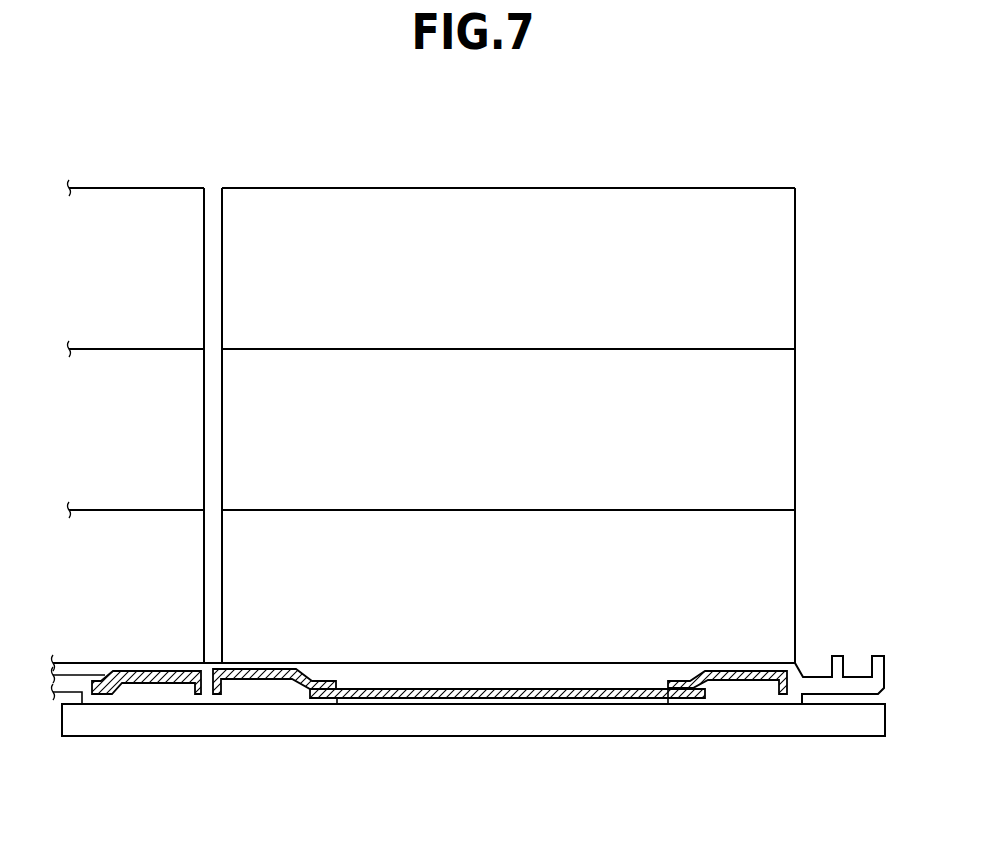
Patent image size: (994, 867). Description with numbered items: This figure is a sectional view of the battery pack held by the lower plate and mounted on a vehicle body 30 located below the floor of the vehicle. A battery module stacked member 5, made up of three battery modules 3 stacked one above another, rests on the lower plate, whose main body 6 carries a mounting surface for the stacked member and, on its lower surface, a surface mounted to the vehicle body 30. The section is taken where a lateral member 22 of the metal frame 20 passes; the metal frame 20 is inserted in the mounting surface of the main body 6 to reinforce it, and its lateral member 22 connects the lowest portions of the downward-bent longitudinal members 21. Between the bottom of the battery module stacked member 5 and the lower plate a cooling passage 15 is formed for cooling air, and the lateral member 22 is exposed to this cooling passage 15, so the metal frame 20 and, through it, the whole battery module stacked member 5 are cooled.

The battery module 3 is at (796, 263).
The battery module stacked member 5 is at (808, 371).
The main body 6 is at (168, 662).
The cooling passage 15 is at (441, 688).
The metal frame 20 is at (322, 703).
The longitudinal member 21 is at (258, 681).
The lateral member 22 is at (541, 699).
The vehicle body 30 is at (817, 722).